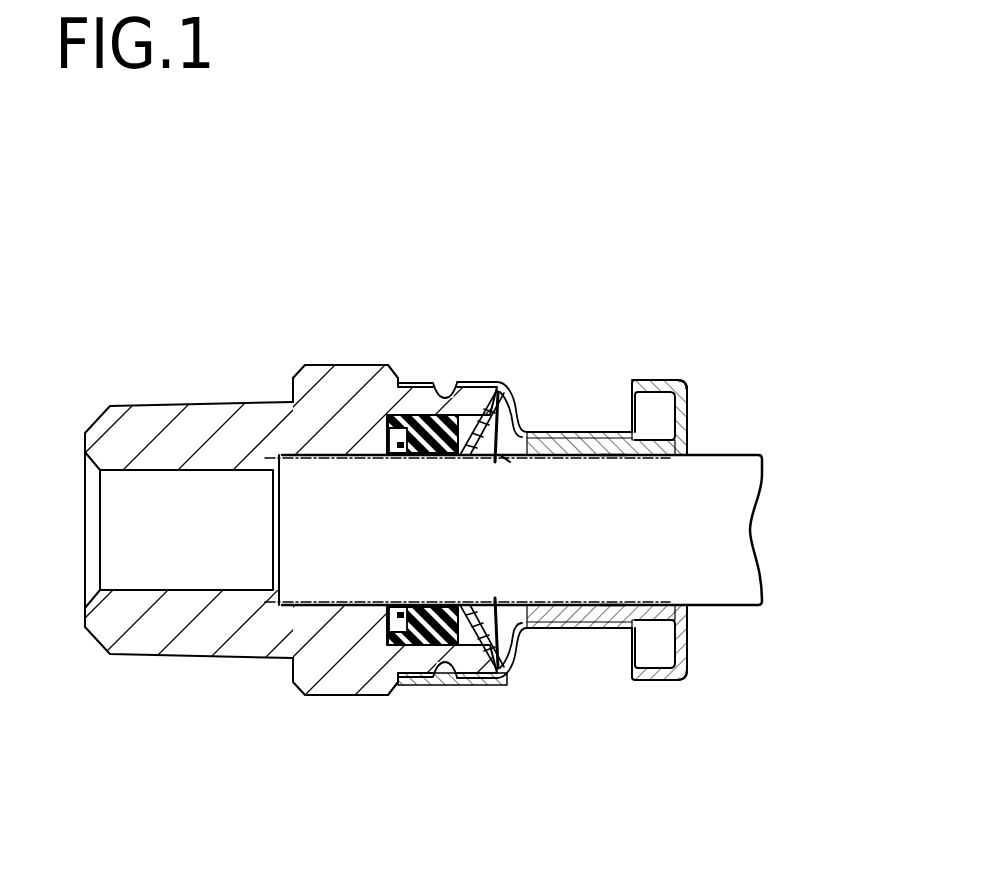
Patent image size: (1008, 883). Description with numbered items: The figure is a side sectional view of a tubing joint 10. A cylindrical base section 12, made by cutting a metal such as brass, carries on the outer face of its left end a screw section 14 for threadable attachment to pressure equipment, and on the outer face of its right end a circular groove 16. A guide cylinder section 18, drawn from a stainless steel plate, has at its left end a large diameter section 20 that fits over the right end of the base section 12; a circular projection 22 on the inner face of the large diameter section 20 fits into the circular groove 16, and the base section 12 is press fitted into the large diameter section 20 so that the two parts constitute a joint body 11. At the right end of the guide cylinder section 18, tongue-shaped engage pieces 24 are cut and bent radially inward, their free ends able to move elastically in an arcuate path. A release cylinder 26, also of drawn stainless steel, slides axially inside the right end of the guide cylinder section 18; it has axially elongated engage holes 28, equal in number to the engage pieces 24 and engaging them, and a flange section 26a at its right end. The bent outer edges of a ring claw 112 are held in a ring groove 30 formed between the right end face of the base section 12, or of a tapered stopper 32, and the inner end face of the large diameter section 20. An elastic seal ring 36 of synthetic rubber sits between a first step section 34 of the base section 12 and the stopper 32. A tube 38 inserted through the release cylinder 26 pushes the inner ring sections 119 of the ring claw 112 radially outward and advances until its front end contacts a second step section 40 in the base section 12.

The tubing joint 10 is at (668, 342).
The joint body 11 is at (290, 250).
The base section 12 is at (323, 358).
The screw section 14 is at (135, 410).
The circular groove 16 is at (426, 382).
The guide cylinder section 18 is at (412, 382).
The large diameter section 20 is at (483, 382).
The circular projection 22 is at (448, 686).
The engage pieces 24 is at (578, 432).
The release cylinder 26 is at (686, 366).
The flange section 26a is at (686, 400).
The engage holes 28 is at (603, 447).
The ring groove 30 is at (506, 385).
The stopper 32 is at (457, 453).
The first step section 34 is at (388, 455).
The elastic seal ring 36 is at (353, 683).
The tube 38 is at (745, 440).
The second step section 40 is at (289, 472).
The ring claw 112 is at (512, 470).
The inner ring sections 119 is at (493, 462).